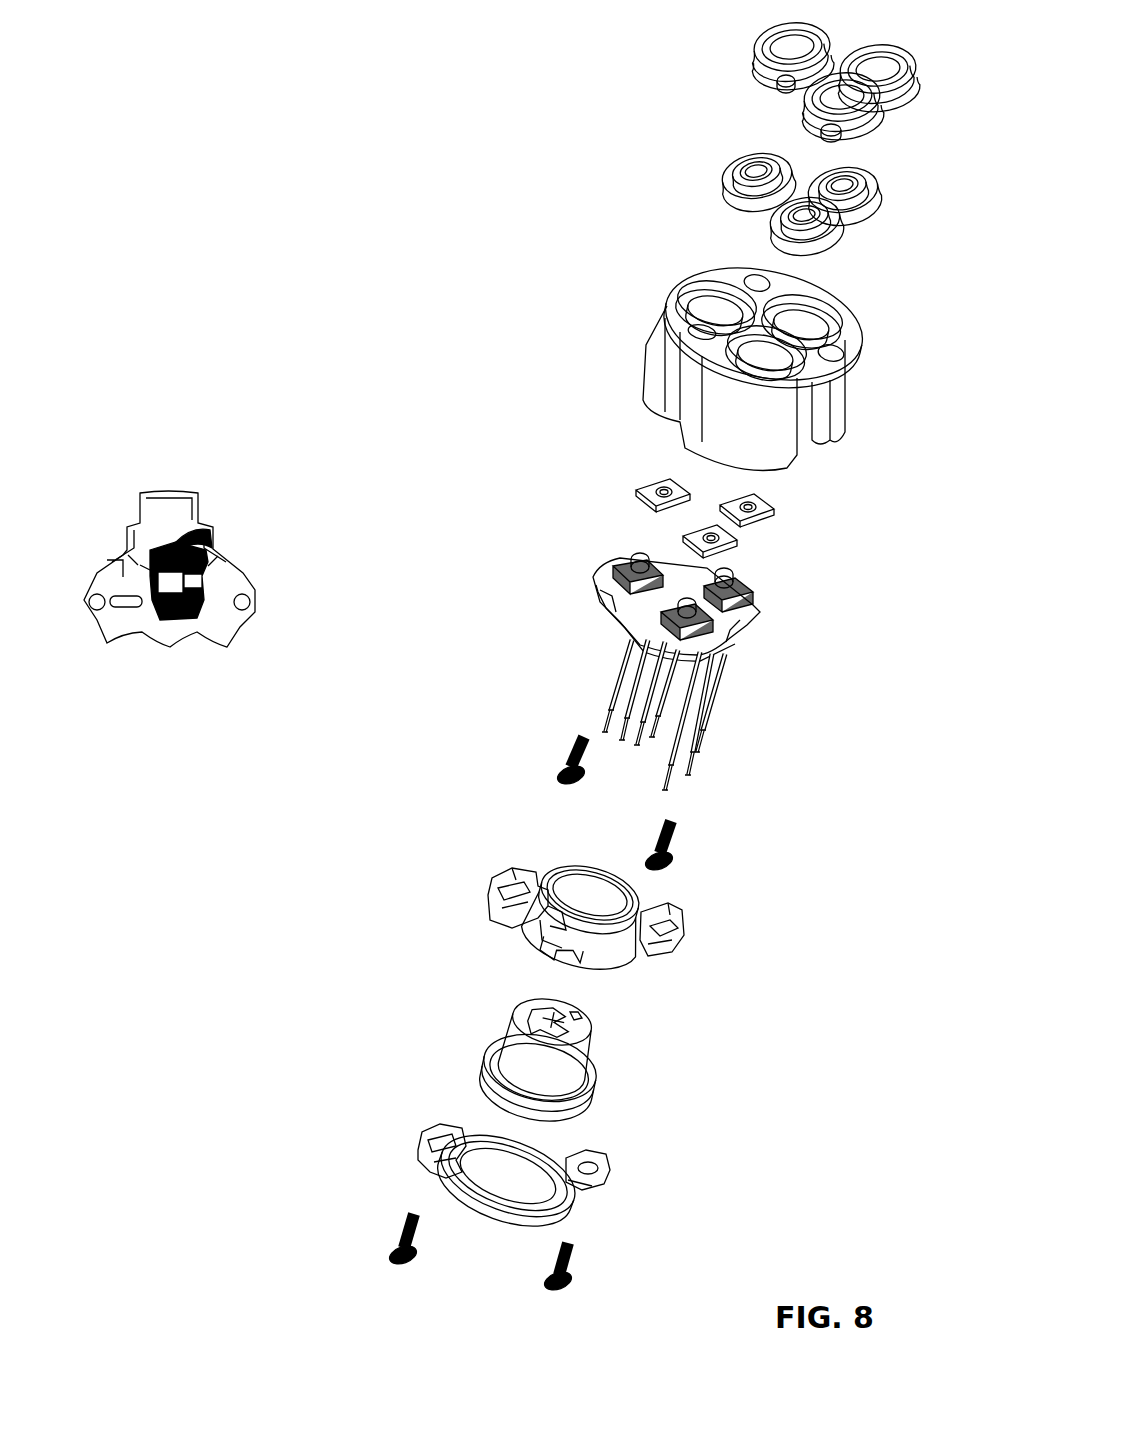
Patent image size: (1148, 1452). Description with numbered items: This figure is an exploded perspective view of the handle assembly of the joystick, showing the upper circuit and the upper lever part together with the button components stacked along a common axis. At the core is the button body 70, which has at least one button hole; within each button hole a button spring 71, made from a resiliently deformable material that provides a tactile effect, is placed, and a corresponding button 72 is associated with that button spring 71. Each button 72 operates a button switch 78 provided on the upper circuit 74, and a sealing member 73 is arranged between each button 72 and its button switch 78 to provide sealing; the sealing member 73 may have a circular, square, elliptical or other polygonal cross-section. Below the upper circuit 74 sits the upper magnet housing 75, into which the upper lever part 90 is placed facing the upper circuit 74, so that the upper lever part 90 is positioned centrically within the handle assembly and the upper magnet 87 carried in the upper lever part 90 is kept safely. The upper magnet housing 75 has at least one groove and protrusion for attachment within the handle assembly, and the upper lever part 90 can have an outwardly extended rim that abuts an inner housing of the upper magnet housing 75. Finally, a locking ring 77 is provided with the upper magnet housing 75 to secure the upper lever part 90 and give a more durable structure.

The button body 70 is at (628, 348).
The button spring 71 is at (710, 165).
The button 72 is at (735, 56).
The sealing member 73 is at (630, 515).
The upper circuit 74 is at (577, 592).
The upper magnet housing 75 is at (470, 890).
The locking ring 77 is at (395, 1133).
The button switch 78 is at (640, 560).
The upper magnet 87 is at (577, 1018).
The upper lever part 90 is at (480, 1017).